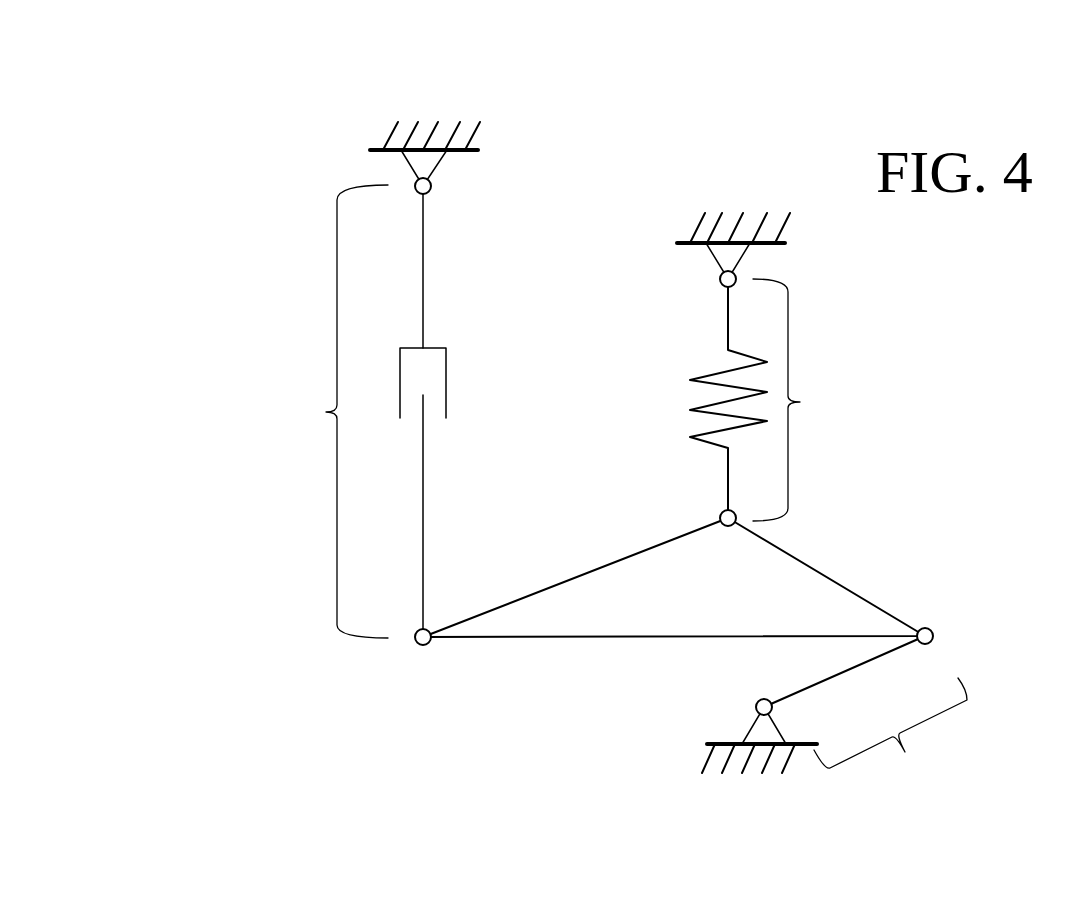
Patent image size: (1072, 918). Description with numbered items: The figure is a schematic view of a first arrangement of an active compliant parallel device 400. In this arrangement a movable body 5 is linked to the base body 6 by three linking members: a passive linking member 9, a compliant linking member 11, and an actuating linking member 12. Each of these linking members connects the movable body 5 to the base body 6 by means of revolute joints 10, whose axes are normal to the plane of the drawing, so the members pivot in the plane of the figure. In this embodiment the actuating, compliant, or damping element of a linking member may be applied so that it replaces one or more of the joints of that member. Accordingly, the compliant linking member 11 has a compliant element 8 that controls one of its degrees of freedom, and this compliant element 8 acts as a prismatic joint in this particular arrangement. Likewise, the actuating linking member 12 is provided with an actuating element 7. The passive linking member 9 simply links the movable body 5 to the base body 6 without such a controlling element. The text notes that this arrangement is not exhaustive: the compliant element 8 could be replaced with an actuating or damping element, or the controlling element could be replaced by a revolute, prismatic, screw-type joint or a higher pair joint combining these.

The active compliant parallel device 400 is at (260, 788).
The movable body 5 is at (817, 553).
The base body 6 is at (743, 193).
The actuating element 7 is at (455, 382).
The compliant element 8 is at (770, 376).
The passive linking member 9 is at (865, 713).
The revolute joint 10 is at (440, 185).
The compliant linking member 11 is at (800, 402).
The actuating linking member 12 is at (313, 411).